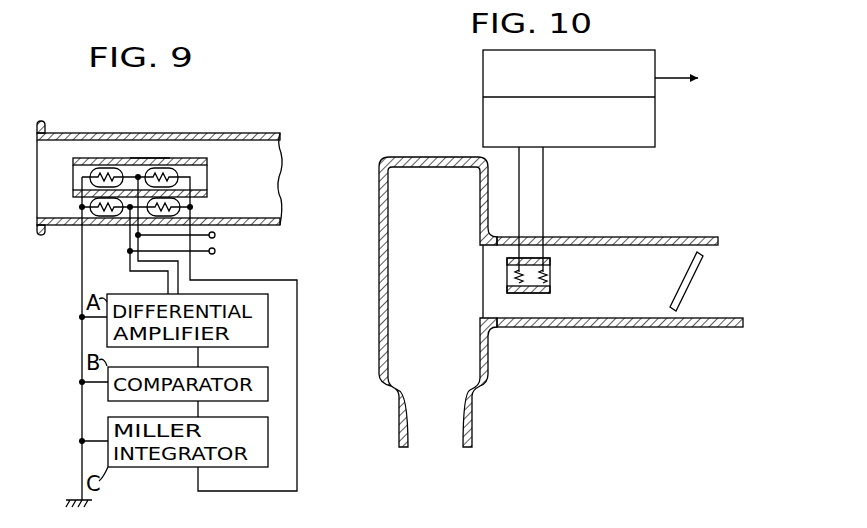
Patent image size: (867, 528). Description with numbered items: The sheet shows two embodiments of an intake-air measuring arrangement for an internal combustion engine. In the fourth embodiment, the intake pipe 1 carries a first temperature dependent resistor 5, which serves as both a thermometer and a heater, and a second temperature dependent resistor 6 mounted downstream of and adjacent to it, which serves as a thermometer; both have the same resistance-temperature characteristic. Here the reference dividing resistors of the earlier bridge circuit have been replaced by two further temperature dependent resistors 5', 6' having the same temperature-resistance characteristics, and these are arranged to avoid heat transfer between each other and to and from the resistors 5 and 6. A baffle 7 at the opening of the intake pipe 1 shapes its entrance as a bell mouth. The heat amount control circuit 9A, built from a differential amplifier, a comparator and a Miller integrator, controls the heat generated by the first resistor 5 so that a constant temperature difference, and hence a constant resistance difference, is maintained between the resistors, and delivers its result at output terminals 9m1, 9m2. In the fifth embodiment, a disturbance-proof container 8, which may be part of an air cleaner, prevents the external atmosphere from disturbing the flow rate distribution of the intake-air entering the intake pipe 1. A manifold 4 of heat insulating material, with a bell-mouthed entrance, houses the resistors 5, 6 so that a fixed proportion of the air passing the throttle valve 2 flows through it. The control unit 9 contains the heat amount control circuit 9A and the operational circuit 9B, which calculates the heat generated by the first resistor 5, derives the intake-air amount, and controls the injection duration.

In FIG. 9, the intake pipe 1 is at (232, 134).
In FIG. 10, the intake pipe 1 is at (634, 320).
In FIG. 10, the throttle valve 2 is at (683, 283).
In FIG. 9, the manifold 4 is at (147, 159).
In FIG. 10, the manifold 4 is at (540, 294).
In FIG. 9, the first temperature dependent resistor 5 is at (106, 145).
In FIG. 10, the first temperature dependent resistor 5 is at (504, 294).
In FIG. 9, the second temperature dependent resistor 6 is at (171, 145).
In FIG. 10, the second temperature dependent resistor 6 is at (561, 273).
In FIG. 9, the temperature dependent resistor 5' is at (85, 231).
In FIG. 9, the temperature dependent resistor 6' is at (195, 196).
In FIG. 9, the baffle 7 is at (43, 130).
In FIG. 10, the baffle 7 is at (488, 247).
In FIG. 10, the disturbance-proof container 8 is at (393, 187).
In FIG. 10, the control unit 9 is at (657, 63).
In FIG. 10, the heat amount control circuit 9A is at (483, 127).
In FIG. 10, the operational circuit 9B is at (483, 92).
In FIG. 9, the output terminal 9m1 is at (215, 237).
In FIG. 9, the output terminal 9m2 is at (215, 253).